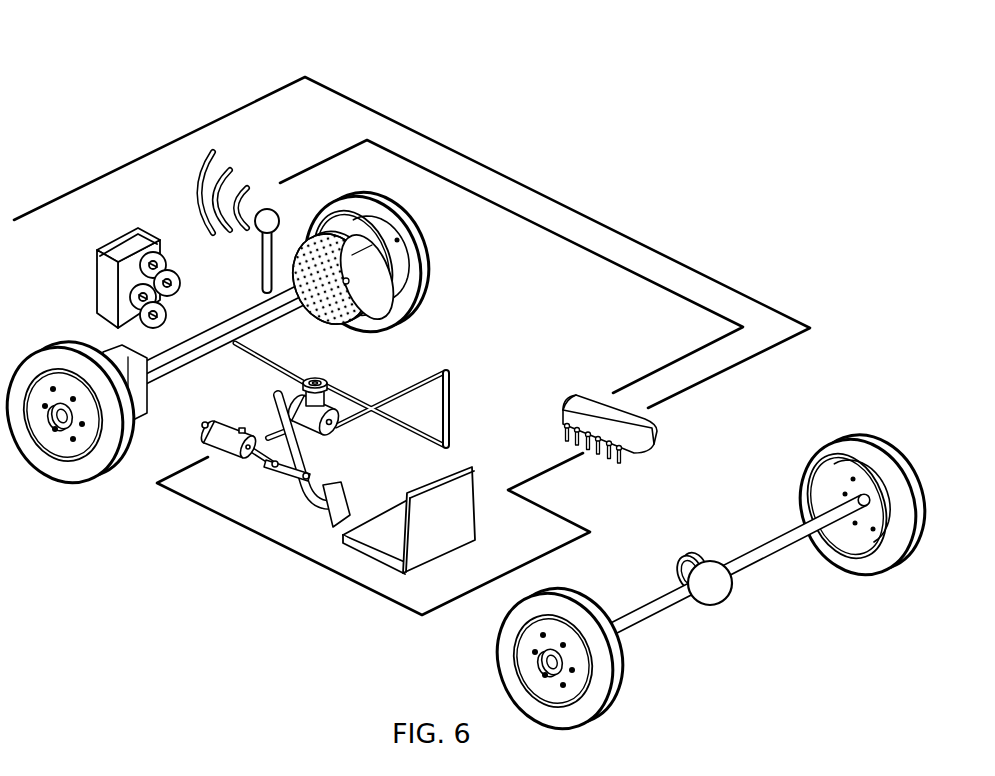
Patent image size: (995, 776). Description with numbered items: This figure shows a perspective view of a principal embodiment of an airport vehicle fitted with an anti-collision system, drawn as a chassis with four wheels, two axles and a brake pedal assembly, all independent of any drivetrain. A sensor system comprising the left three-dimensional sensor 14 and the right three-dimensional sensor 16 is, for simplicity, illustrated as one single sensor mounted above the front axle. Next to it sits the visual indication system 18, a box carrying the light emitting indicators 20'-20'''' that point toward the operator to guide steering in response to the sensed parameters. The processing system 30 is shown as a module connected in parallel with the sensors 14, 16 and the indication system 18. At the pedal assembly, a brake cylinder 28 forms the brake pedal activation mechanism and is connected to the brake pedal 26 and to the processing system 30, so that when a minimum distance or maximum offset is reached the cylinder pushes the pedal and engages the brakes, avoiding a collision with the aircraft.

The left 3D sensor 14 is at (297, 158).
The right 3D sensor 16 is at (276, 213).
The visual indication system 18 is at (118, 231).
The light emitting indicators 20'-20'''' is at (115, 176).
The brake pedal 26 is at (340, 508).
The brake cylinder 28 is at (222, 450).
The processing system 30 is at (588, 398).